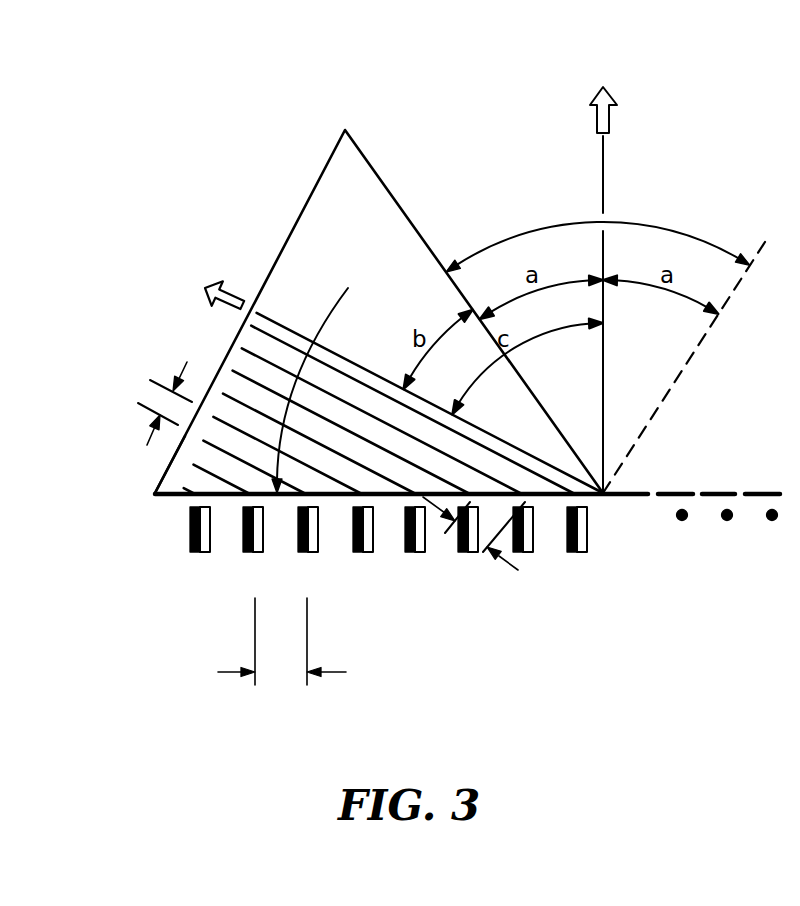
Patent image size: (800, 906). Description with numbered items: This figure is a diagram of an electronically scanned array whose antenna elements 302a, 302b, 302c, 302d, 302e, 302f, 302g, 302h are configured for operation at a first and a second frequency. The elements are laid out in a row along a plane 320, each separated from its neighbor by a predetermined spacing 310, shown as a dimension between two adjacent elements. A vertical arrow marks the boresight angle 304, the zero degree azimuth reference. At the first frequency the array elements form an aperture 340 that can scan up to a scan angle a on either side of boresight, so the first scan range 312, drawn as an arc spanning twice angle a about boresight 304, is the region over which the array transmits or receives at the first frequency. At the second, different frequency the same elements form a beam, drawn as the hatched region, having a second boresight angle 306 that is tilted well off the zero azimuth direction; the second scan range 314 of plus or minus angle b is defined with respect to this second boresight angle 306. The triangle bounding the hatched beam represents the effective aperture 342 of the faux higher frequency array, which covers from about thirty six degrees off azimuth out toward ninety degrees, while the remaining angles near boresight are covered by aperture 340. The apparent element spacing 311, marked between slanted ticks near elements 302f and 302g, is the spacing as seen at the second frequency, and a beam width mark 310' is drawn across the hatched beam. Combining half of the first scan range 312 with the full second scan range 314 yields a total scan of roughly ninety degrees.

The antenna element 302a is at (188, 512).
The antenna element 302b is at (243, 527).
The antenna element 302c is at (300, 527).
The antenna element 302d is at (353, 527).
The antenna element 302e is at (405, 512).
The antenna element 302f is at (462, 550).
The antenna element 302g is at (530, 527).
The antenna element 302h is at (587, 515).
The boresight angle 304 is at (592, 98).
The second boresight angle 306 is at (283, 326).
The spacing 310 is at (280, 665).
The beam width 310' is at (143, 371).
The apparent element spacing 311 is at (482, 545).
The first scan range 312 is at (598, 239).
The second scan range 314 is at (324, 379).
The plane 320 is at (150, 492).
The aperture 340 is at (157, 496).
The effective aperture 342 is at (318, 175).